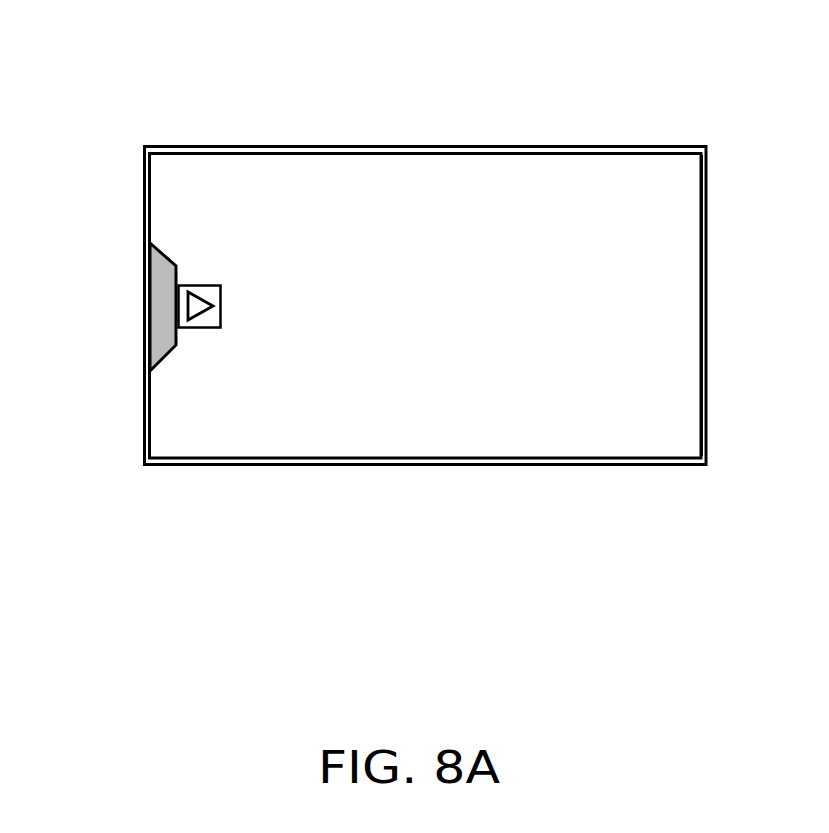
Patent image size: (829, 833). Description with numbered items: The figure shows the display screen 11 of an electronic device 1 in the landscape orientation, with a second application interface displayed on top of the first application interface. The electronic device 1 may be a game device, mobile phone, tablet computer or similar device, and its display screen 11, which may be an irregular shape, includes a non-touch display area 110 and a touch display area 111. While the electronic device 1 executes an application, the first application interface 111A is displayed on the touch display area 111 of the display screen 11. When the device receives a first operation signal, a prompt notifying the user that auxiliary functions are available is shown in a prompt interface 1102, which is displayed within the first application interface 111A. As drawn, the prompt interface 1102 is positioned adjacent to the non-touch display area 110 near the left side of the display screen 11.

The electronic device 1 is at (518, 99).
The display screen 11 is at (588, 153).
The touch display area 111 is at (682, 252).
The first application interface 111A is at (683, 387).
The non-touch display area 110 is at (162, 293).
The prompt interface 1102 is at (210, 292).